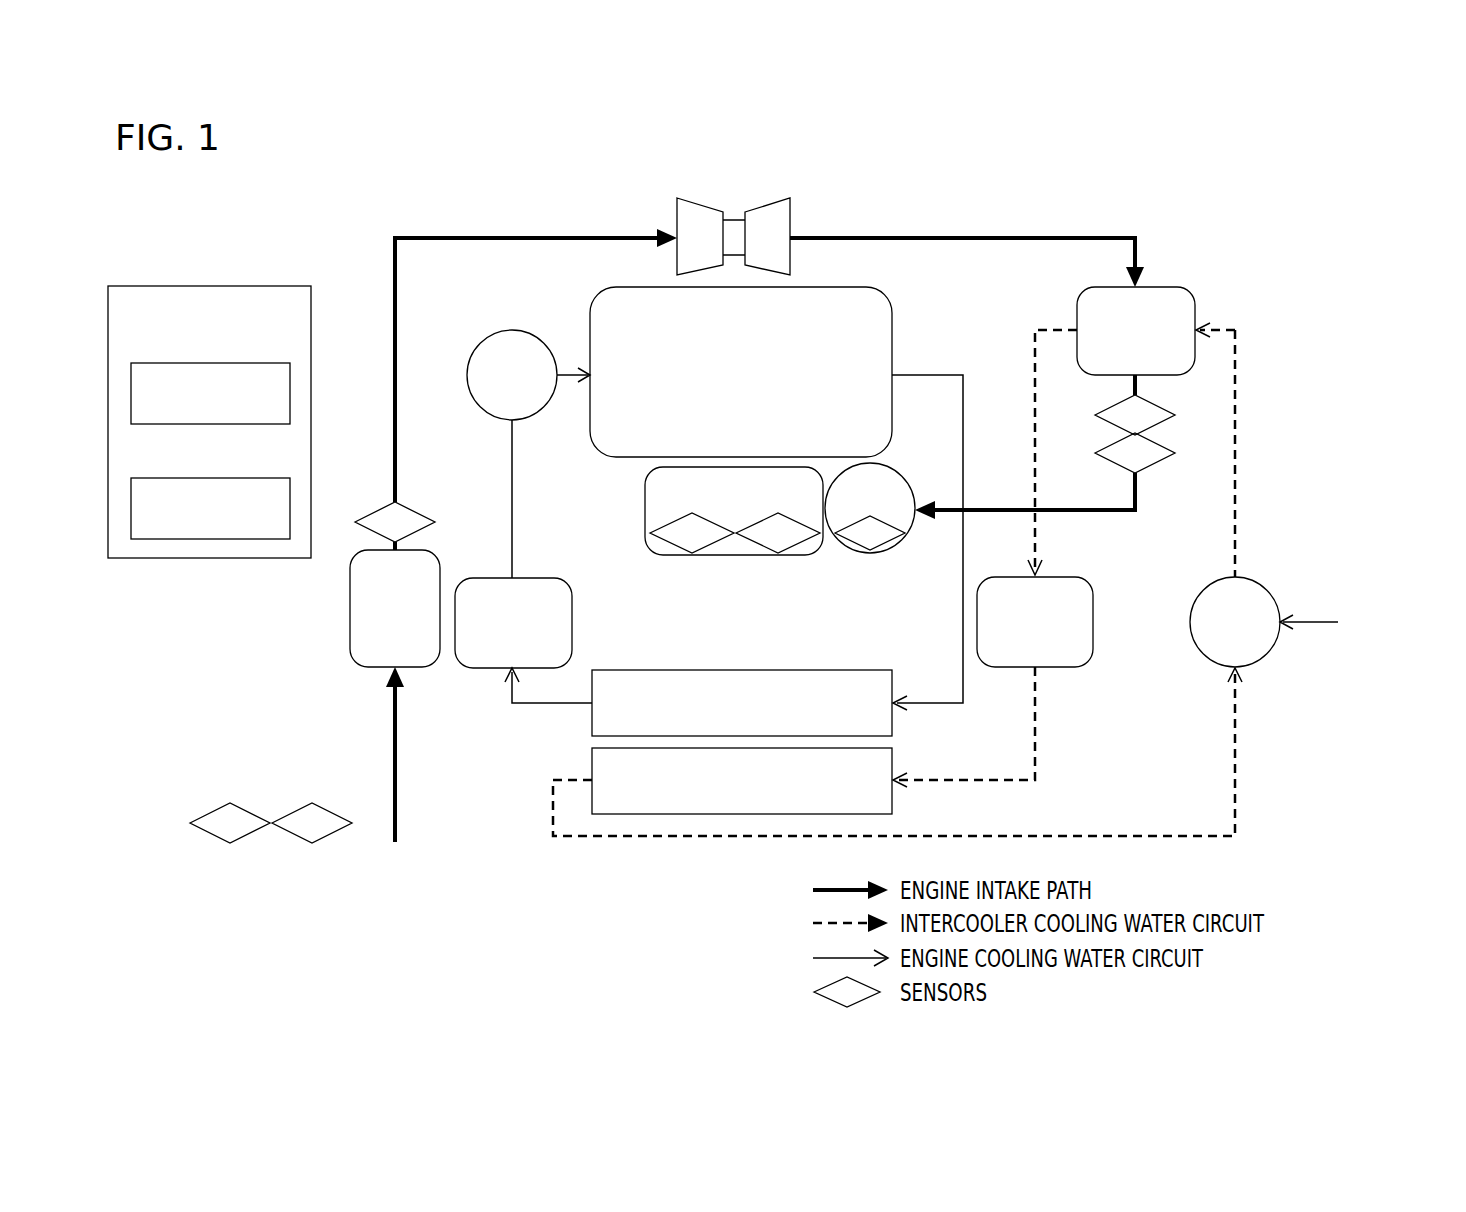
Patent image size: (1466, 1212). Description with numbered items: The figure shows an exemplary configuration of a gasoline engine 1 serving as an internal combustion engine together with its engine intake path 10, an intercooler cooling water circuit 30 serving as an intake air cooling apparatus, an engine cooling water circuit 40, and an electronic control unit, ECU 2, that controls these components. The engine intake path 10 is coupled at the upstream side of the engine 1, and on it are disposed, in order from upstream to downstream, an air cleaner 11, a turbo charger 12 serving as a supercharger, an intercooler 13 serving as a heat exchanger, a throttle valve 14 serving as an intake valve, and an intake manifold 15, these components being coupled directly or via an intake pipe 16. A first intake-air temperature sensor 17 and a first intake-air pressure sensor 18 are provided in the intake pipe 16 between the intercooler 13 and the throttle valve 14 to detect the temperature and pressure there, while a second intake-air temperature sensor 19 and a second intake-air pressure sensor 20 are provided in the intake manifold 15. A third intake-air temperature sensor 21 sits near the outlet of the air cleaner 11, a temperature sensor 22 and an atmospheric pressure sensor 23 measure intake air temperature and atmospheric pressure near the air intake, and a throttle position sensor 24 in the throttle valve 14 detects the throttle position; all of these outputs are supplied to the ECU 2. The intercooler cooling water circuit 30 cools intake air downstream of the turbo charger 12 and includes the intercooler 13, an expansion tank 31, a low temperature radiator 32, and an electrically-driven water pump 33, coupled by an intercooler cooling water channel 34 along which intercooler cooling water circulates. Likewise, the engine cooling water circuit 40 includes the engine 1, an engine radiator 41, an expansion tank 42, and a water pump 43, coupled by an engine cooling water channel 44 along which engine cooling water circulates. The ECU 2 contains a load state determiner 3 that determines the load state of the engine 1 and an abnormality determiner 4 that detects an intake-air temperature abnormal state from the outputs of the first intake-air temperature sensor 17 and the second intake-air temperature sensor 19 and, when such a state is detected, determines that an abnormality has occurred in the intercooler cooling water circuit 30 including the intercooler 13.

The engine 1 is at (892, 318).
The electronic control unit (ECU) 2 is at (255, 286).
The load state determiner 3 is at (245, 363).
The abnormality determiner 4 is at (245, 478).
The engine intake path 10 is at (480, 205).
The air cleaner 11 is at (440, 573).
The turbo charger 12 is at (792, 215).
The intercooler 13 is at (1166, 287).
The throttle valve 14 is at (870, 555).
The intake manifold 15 is at (805, 556).
The intake pipe 16 is at (1105, 512).
The first intake-air temperature sensor 17 is at (1172, 410).
The first intake-air pressure sensor 18 is at (1172, 448).
The second intake-air temperature sensor 19 is at (688, 556).
The second intake-air pressure sensor 20 is at (775, 556).
The third intake-air temperature sensor 21 is at (425, 510).
The temperature sensor 22 is at (245, 806).
The atmospheric pressure sensor 23 is at (332, 808).
The throttle position sensor 24 is at (905, 543).
The intercooler cooling water circuit 30 is at (1268, 803).
The expansion tank 31 is at (1052, 578).
The low temperature radiator 32 is at (895, 758).
The electrically-driven water pump 33 is at (1252, 578).
The intercooler cooling water channel 34 is at (1238, 454).
The engine cooling water circuit 40 is at (484, 720).
The engine radiator 41 is at (895, 682).
The expansion tank 42 is at (548, 578).
The water pump 43 is at (530, 335).
The engine cooling water channel 44 is at (516, 460).